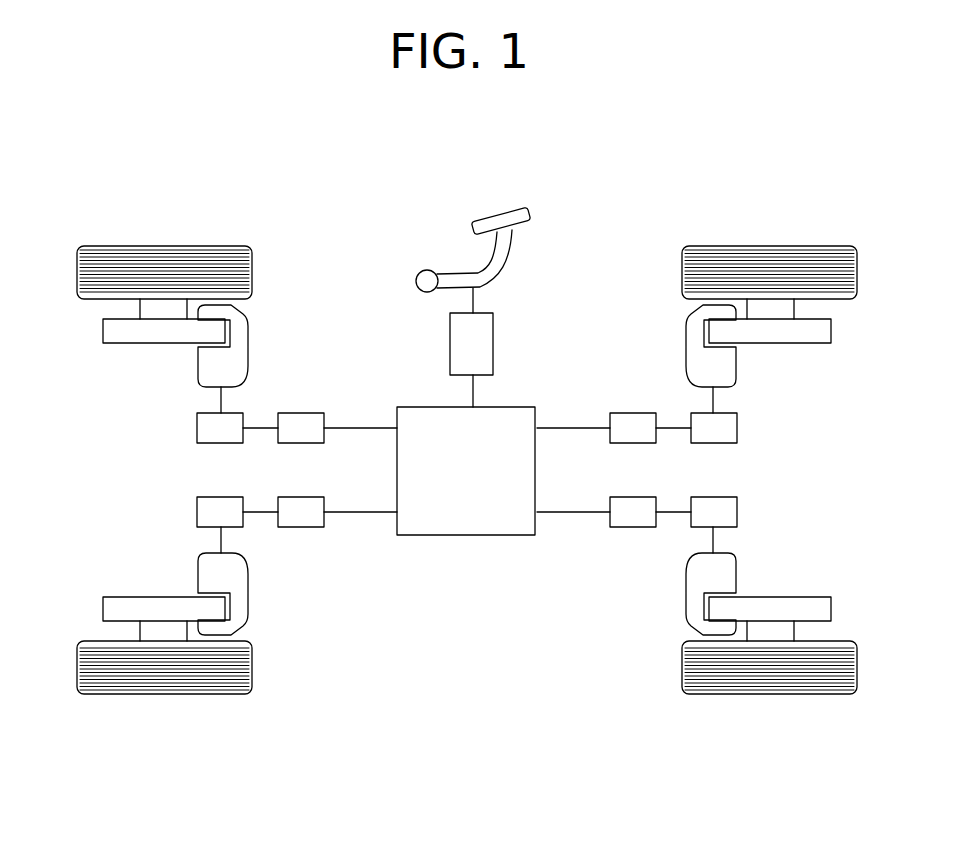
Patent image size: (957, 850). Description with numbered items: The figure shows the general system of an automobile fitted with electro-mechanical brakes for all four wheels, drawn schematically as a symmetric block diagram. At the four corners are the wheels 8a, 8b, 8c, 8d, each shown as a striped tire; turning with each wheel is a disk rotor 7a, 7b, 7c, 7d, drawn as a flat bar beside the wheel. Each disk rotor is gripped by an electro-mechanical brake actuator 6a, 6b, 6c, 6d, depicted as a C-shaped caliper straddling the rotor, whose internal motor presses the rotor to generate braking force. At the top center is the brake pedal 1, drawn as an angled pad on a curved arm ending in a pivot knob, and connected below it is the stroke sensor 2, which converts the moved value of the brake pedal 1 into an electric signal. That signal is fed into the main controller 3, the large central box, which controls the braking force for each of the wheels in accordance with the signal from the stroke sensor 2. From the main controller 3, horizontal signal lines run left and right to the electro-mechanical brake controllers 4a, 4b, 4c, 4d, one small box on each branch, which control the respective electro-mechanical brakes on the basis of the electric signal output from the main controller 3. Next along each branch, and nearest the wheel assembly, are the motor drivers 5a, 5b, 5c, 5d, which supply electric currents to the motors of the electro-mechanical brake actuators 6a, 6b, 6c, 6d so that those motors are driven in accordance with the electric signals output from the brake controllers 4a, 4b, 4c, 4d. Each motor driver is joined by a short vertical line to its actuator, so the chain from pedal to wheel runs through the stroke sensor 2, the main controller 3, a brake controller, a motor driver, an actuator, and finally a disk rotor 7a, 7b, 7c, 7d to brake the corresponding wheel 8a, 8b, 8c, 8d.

The brake pedal 1 is at (472, 223).
The stroke sensor 2 is at (450, 342).
The main controller 3 is at (467, 535).
The electro-mechanical brake controller 4a is at (300, 413).
The electro-mechanical brake controller 4b is at (300, 527).
The electro-mechanical brake controller 4c is at (634, 413).
The electro-mechanical brake controller 4d is at (634, 527).
The motor driver 5a is at (197, 430).
The motor driver 5b is at (197, 510).
The motor driver 5c is at (737, 430).
The motor driver 5d is at (737, 510).
The electro-mechanical brake actuator 6a is at (197, 373).
The electro-mechanical brake actuator 6b is at (197, 567).
The electro-mechanical brake actuator 6c is at (737, 373).
The electro-mechanical brake actuator 6d is at (737, 567).
The disk rotor 7a is at (118, 344).
The disk rotor 7b is at (118, 596).
The disk rotor 7c is at (816, 344).
The disk rotor 7d is at (816, 596).
The wheel 8a is at (186, 246).
The wheel 8b is at (186, 694).
The wheel 8c is at (789, 246).
The wheel 8d is at (789, 694).